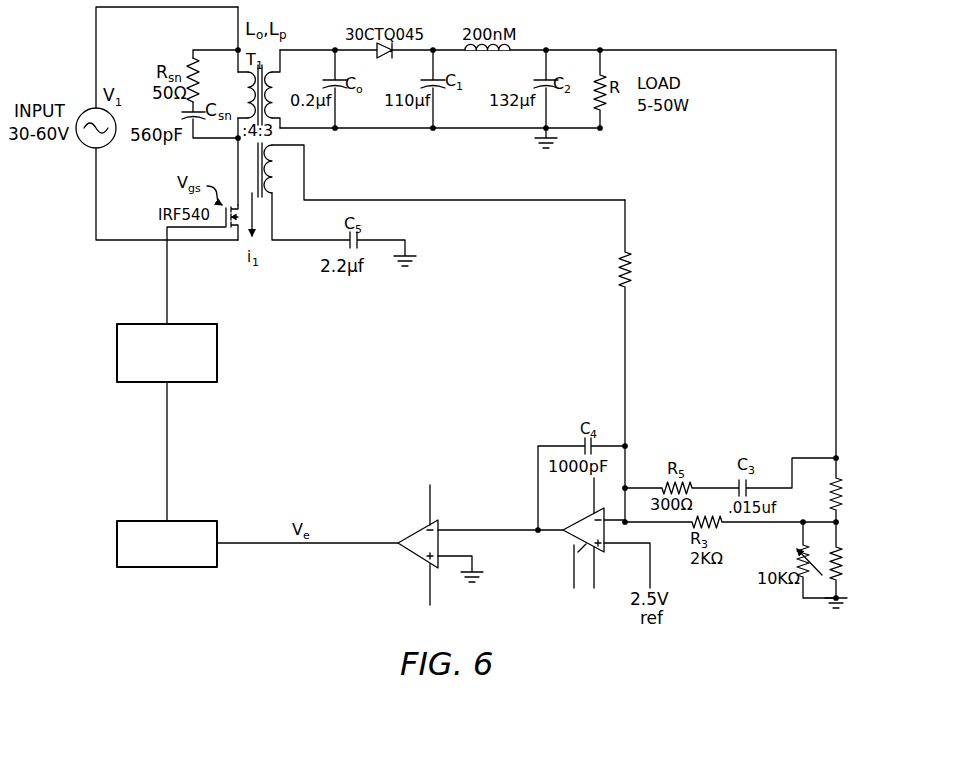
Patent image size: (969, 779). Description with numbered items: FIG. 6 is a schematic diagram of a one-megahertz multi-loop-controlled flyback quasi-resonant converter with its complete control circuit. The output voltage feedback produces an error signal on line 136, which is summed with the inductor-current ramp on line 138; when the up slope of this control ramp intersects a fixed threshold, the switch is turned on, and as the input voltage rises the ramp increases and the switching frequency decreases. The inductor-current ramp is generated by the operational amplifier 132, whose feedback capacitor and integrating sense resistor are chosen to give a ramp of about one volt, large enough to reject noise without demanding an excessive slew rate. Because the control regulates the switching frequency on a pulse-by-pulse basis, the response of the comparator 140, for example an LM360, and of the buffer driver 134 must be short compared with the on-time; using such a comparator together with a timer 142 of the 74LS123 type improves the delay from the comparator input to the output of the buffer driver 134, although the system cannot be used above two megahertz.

The operational amplifier 132 is at (573, 516).
The buffer driver 134 is at (217, 365).
The line carrying the error signal 136 is at (860, 403).
The line carrying the inductor-current ramp 138 is at (649, 403).
The comparator 140 is at (424, 521).
The timer 142 is at (195, 521).